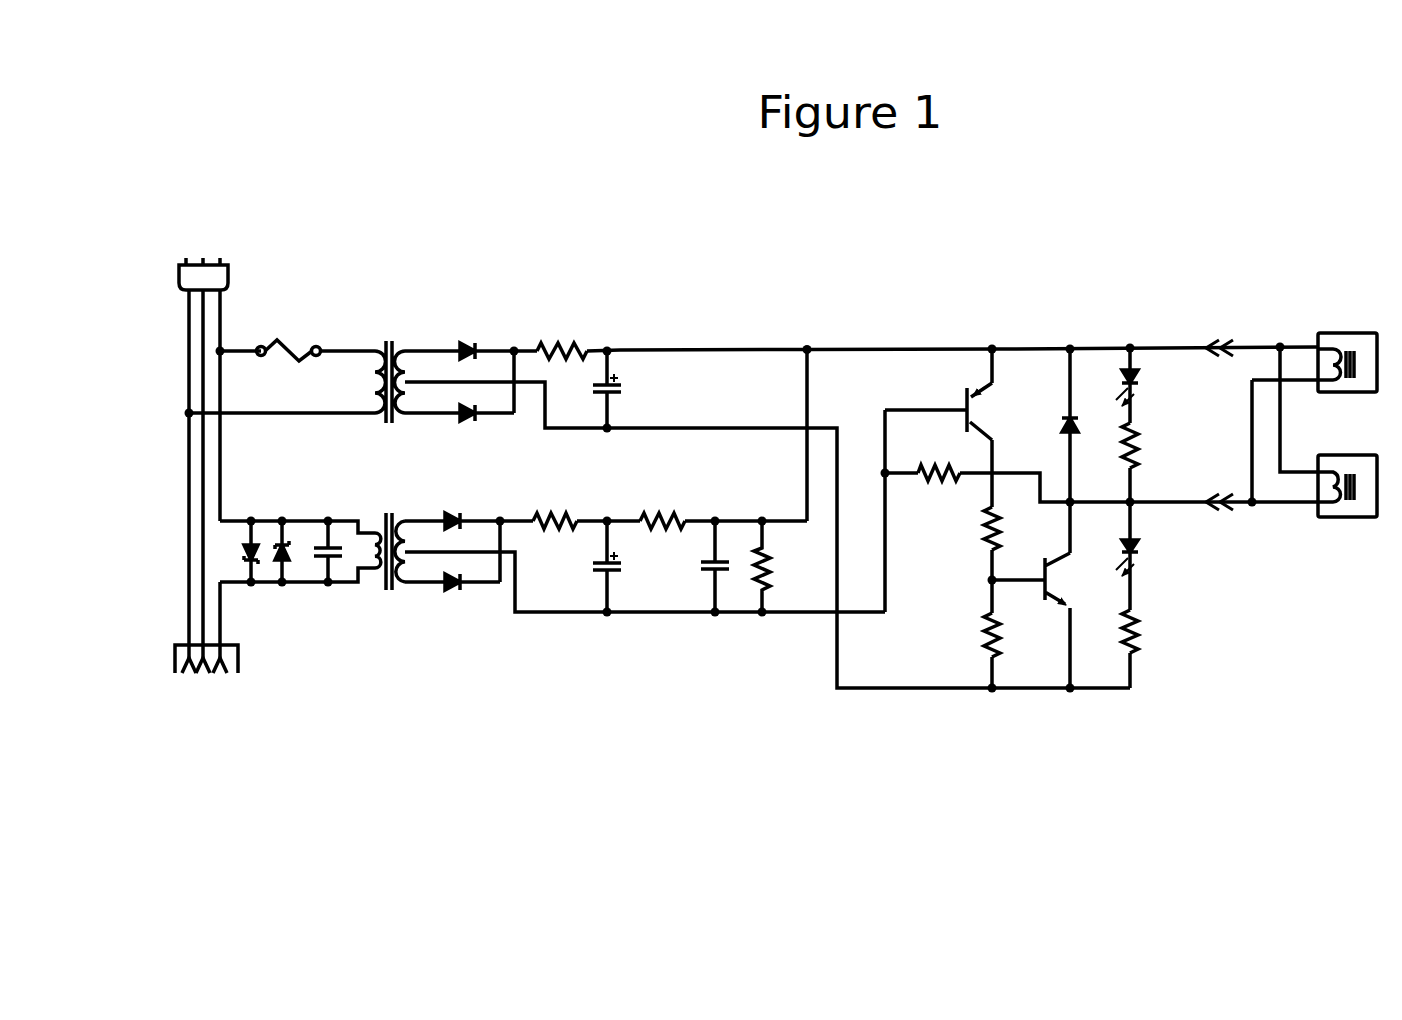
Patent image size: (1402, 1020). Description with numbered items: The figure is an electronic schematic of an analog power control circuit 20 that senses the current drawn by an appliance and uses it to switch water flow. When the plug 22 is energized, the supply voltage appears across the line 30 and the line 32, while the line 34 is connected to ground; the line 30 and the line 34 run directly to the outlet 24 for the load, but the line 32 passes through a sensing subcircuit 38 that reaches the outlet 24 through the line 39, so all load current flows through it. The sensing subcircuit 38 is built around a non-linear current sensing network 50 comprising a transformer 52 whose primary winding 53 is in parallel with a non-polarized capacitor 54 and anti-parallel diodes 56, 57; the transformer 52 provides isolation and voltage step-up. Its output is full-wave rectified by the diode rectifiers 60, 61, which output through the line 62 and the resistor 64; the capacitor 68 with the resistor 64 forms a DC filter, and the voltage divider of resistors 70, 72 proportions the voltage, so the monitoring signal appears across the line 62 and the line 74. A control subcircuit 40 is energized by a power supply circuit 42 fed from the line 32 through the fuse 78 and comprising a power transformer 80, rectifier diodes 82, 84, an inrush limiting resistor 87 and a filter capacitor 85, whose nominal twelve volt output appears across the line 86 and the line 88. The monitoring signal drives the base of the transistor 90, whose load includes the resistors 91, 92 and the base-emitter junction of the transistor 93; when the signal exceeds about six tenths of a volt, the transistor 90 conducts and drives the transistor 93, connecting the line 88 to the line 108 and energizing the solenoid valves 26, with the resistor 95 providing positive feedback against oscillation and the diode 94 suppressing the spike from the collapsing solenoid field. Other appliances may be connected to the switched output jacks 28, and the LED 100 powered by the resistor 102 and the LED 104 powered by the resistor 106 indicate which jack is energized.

The analog power control circuit 20 is at (739, 692).
The plug 22 is at (221, 270).
The outlet 24 is at (221, 676).
The solenoid valves 26 is at (1335, 395).
The switched output jacks 28 is at (1222, 487).
The line 30 is at (185, 325).
The line 32 is at (225, 310).
The line 34 is at (203, 368).
The sensing subcircuit 38 is at (457, 642).
The line 39 is at (222, 607).
The control subcircuit 40 is at (944, 274).
The power supply circuit 42 is at (571, 277).
The current sensing network 50 is at (403, 586).
The transformer 52 is at (404, 514).
The primary winding 53 is at (370, 560).
The non-polarized capacitor 54 is at (335, 540).
The diode 56 is at (258, 536).
The diode 57 is at (284, 561).
The diode rectifier 60 is at (465, 511).
The diode rectifier 61 is at (456, 594).
The line 62 is at (546, 614).
The resistor 64 is at (555, 508).
The capacitor 68 is at (626, 575).
The resistor 70 is at (672, 512).
The resistor 72 is at (776, 570).
The line 74 is at (740, 514).
The fuse 78 is at (303, 335).
The power transformer 80 is at (388, 340).
The rectifier diode 82 is at (466, 338).
The rectifier diode 84 is at (467, 424).
The filter capacitor 85 is at (618, 400).
The line 86 is at (826, 346).
The inrush limiting resistor 87 is at (563, 337).
The line 88 is at (780, 420).
The transistor 90 is at (962, 396).
The resistor 91 is at (978, 534).
The resistor 92 is at (978, 637).
The transistor 93 is at (1045, 602).
The diode 94 is at (1062, 410).
The resistor 95 is at (957, 488).
The LED 100 is at (1108, 378).
The resistor 102 is at (1147, 447).
The LED 104 is at (1150, 552).
The resistor 106 is at (1150, 633).
The line 108 is at (1160, 508).